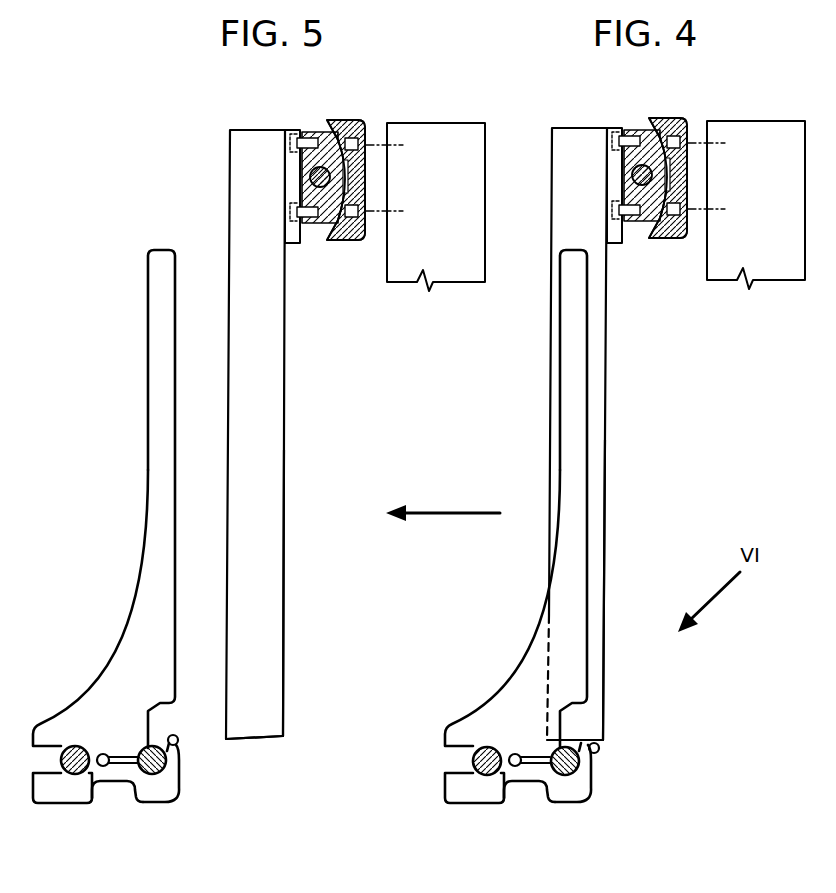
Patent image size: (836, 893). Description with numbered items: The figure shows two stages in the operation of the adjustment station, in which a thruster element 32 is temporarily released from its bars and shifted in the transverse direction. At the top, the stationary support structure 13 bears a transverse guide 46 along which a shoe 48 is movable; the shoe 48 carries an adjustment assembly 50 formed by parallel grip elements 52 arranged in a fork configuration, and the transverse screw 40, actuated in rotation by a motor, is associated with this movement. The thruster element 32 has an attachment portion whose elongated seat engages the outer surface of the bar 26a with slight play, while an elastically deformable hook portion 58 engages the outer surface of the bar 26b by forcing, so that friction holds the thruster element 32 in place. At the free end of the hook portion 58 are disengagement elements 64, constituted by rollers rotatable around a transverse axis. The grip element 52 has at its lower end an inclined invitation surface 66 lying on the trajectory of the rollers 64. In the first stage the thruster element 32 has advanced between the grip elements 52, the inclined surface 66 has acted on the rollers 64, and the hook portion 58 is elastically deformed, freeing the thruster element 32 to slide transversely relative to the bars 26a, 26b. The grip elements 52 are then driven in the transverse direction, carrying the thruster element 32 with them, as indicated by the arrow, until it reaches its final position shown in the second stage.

In FIG. 5, the stationary support structure 13 is at (447, 113).
In FIG. 4, the stationary support structure 13 is at (773, 114).
In FIG. 5, the bar 26a is at (73, 775).
In FIG. 4, the bar 26a is at (487, 776).
In FIG. 5, the bar 26b is at (152, 775).
In FIG. 4, the bar 26b is at (568, 776).
In FIG. 5, the thruster element 32 is at (142, 417).
In FIG. 4, the thruster element 32 is at (555, 417).
In FIG. 5, the transverse screw 40 is at (310, 175).
In FIG. 4, the transverse screw 40 is at (632, 174).
In FIG. 5, the transverse guide 46 is at (346, 120).
In FIG. 4, the transverse guide 46 is at (668, 118).
In FIG. 5, the shoe 48 is at (320, 135).
In FIG. 4, the shoe 48 is at (642, 133).
In FIG. 5, the adjustment assembly 50 is at (299, 437).
In FIG. 4, the adjustment assembly 50 is at (621, 385).
In FIG. 5, the grip element 52 is at (286, 570).
In FIG. 4, the grip element 52 is at (606, 528).
In FIG. 5, the hook portion 58 is at (161, 790).
In FIG. 4, the hook portion 58 is at (586, 782).
In FIG. 5, the disengagement elements 64 is at (179, 745).
In FIG. 4, the disengagement elements 64 is at (600, 753).
In FIG. 5, the inclined invitation surfaces 66 is at (273, 740).
In FIG. 4, the inclined invitation surfaces 66 is at (604, 742).